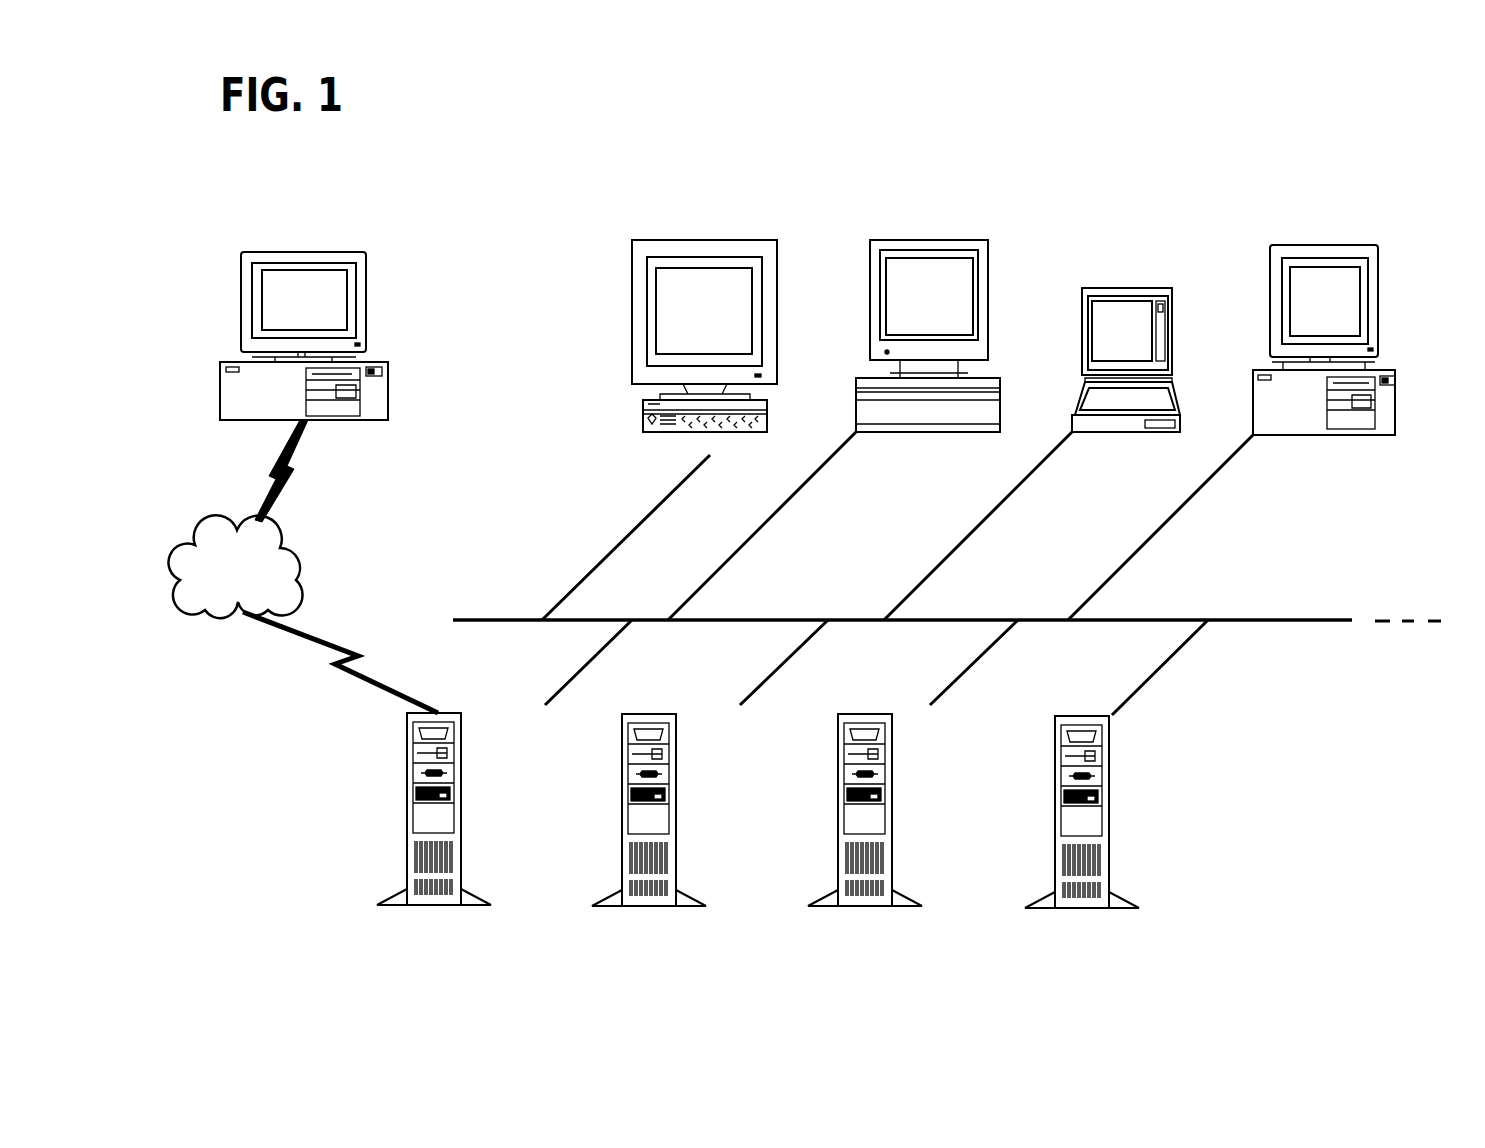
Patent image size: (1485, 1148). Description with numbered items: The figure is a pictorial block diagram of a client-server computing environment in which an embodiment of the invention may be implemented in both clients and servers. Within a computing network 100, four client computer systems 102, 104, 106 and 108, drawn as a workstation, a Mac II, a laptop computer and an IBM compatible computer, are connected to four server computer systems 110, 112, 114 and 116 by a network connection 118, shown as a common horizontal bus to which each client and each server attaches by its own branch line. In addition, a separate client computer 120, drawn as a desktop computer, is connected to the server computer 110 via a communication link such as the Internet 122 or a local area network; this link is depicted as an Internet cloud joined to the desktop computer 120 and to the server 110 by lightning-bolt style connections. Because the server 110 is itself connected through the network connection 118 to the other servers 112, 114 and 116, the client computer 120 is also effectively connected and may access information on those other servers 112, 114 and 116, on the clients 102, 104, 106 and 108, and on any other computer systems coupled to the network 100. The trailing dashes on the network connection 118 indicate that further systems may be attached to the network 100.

The computing network 100 is at (1326, 787).
The client computer system 102 is at (705, 240).
The client computer system 104 is at (930, 240).
The client computer system 106 is at (1127, 288).
The client computer system 108 is at (1325, 245).
The server computer system 110 is at (461, 810).
The server computer system 112 is at (677, 812).
The server computer system 114 is at (893, 812).
The server computer system 116 is at (1110, 815).
The network connection 118 is at (1008, 621).
The client computer 120 is at (305, 252).
The Internet 122 is at (298, 566).